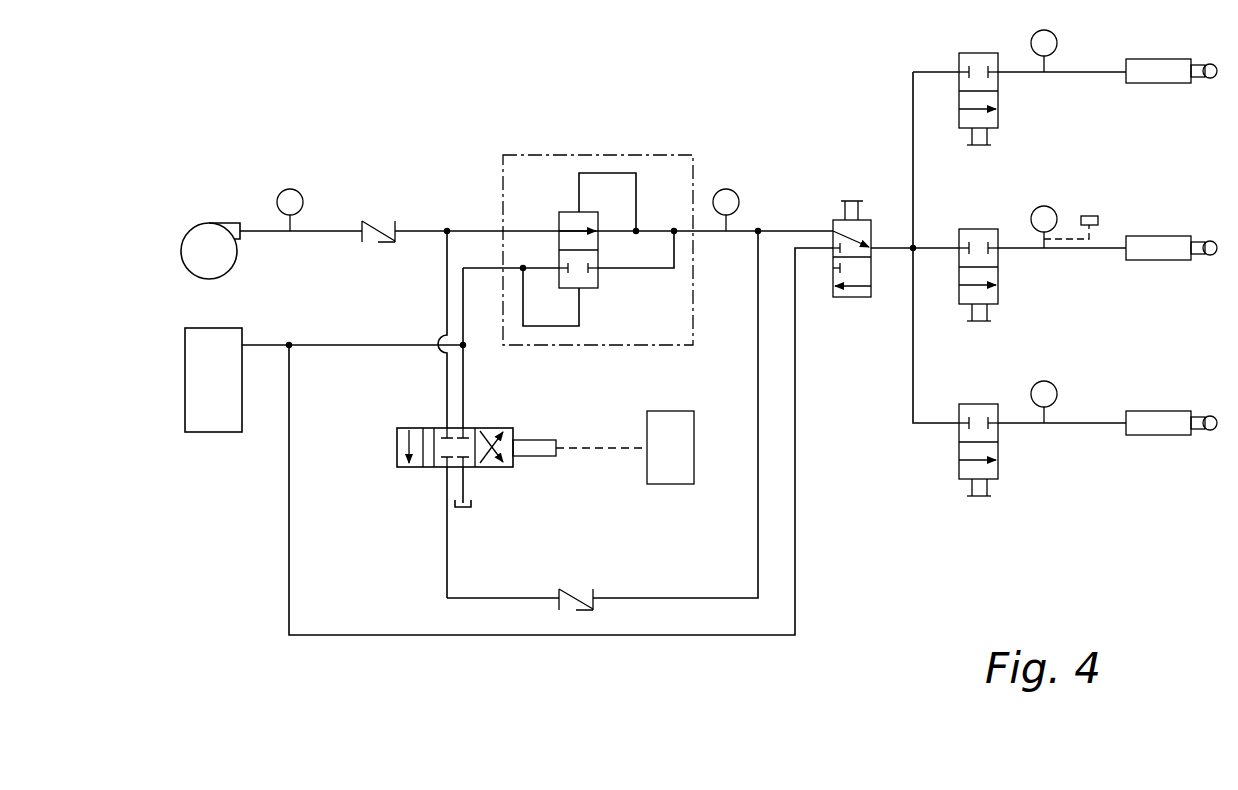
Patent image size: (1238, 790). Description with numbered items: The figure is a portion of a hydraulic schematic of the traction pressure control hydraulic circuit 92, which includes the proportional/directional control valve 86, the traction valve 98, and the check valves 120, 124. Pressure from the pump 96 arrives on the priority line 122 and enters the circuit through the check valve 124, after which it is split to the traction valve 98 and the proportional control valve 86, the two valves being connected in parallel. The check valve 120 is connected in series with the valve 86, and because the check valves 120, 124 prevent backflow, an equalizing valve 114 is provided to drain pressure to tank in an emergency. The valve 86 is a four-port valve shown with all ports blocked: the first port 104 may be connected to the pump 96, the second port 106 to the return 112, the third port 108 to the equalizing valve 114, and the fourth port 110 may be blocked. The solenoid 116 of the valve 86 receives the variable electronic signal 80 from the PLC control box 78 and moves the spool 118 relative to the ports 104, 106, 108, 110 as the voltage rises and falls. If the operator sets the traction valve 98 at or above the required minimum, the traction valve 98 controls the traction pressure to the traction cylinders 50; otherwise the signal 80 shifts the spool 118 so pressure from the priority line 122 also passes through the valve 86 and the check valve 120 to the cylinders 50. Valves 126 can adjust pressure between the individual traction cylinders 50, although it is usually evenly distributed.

The traction pressure control hydraulic circuit 92 is at (224, 82).
The pump 96 is at (182, 251).
The priority line 122 is at (328, 233).
The check valve 124 is at (379, 219).
The traction valve 98 is at (600, 155).
The return 112 is at (185, 379).
The proportional/directional control valve 86 is at (429, 446).
The spool 118 is at (397, 433).
The first port 104 is at (445, 418).
The second port 106 is at (466, 418).
The third port 108 is at (445, 478).
The fourth port 110 is at (466, 478).
The solenoid 116 is at (545, 458).
The electronic signal 80 is at (597, 446).
The PLC control box 78 is at (670, 410).
The check valve 120 is at (578, 588).
The equalizing valve 114 is at (855, 298).
The valves 126 is at (978, 52).
The traction cylinders 50 is at (1160, 58).